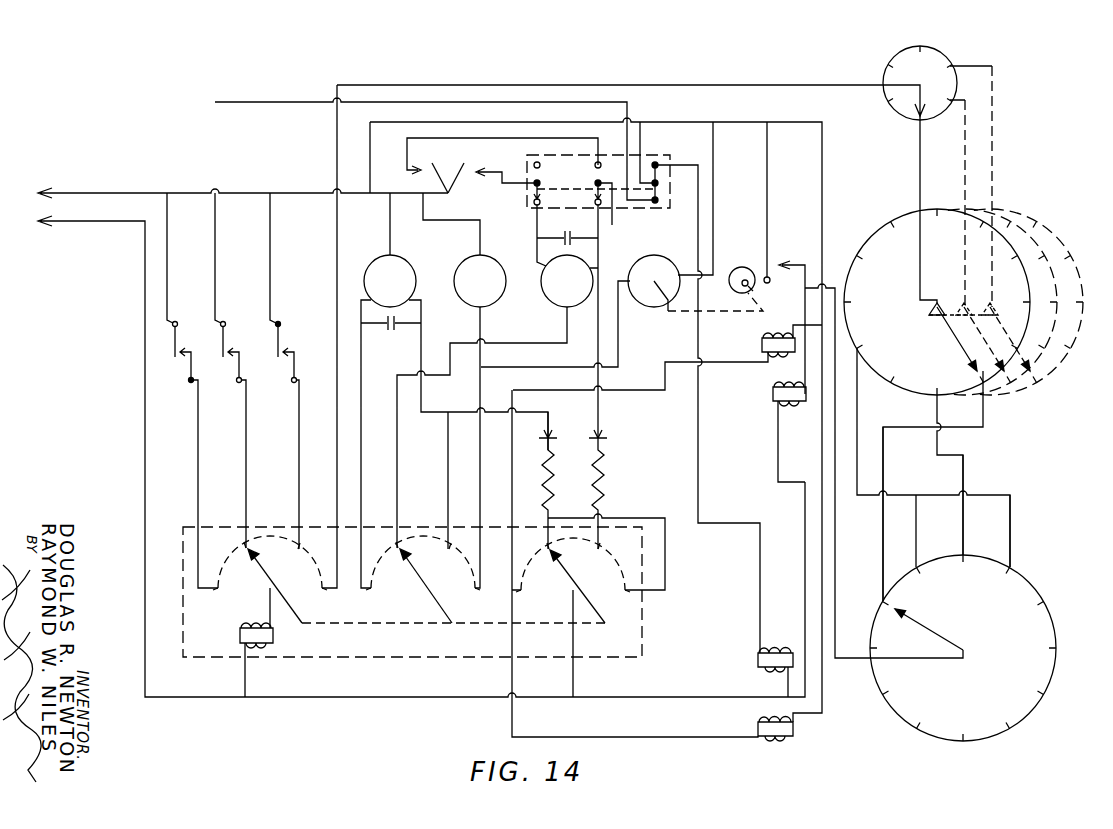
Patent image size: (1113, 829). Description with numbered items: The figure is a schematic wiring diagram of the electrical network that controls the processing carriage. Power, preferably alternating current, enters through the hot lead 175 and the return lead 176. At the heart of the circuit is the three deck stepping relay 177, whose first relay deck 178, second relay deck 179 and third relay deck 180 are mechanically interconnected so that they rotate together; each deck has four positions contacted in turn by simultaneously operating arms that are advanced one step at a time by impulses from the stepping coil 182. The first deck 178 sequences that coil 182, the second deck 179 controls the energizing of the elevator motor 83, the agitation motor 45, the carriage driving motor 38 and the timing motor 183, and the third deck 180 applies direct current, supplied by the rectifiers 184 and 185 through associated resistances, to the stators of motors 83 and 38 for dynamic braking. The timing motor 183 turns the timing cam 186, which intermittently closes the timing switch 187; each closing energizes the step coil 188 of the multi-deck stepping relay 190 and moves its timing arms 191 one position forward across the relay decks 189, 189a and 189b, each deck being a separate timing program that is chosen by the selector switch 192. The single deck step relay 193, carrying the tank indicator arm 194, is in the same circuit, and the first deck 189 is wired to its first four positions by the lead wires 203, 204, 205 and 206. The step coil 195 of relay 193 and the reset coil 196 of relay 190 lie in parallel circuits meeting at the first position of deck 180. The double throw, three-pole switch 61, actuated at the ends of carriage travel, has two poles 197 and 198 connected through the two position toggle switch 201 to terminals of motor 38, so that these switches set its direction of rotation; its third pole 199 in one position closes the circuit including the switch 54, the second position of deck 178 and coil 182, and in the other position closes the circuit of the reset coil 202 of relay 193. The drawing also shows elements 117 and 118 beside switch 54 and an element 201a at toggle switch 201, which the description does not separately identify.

The return lead 176 is at (63, 192).
The hot lead 175 is at (62, 223).
The switch 117 is at (187, 367).
The switch 54 is at (235, 367).
The switch 118 is at (290, 367).
The elevator motor 83 is at (378, 258).
The agitation motor 45 is at (459, 262).
The carriage driving motor 38 is at (545, 267).
The timing motor 183 is at (648, 258).
The switch blade 201a is at (440, 167).
The two position toggle switch 201 is at (457, 181).
The double throw, three-pole switch 61 is at (572, 155).
The pole of switch 61 197 is at (534, 180).
The pole of switch 61 198 is at (596, 181).
The third pole of switch 61 199 is at (660, 180).
The timing cam 186 is at (742, 267).
The timing switch 187 is at (793, 264).
The reset coil 196 is at (763, 339).
The step coil 188 is at (775, 389).
The rectifier 184 is at (552, 437).
The rectifier 185 is at (604, 437).
The first relay deck 178 is at (262, 584).
The second relay deck 179 is at (412, 579).
The third relay deck 180 is at (574, 572).
The stepping coil 182 is at (264, 645).
The three deck stepping relay 177 is at (355, 660).
The reset coil 202 is at (758, 653).
The step coil 195 is at (771, 737).
The selector switch 192 is at (893, 70).
The multi-deck stepping relay 190 is at (974, 281).
The relay deck 189 is at (922, 369).
The relay deck 189a is at (1037, 258).
The relay deck 189b is at (1048, 362).
The timing arm 191 is at (957, 337).
The single deck step relay 193 is at (1027, 715).
The tank indicator arm 194 is at (922, 622).
The lead wire 203 is at (882, 527).
The lead wire 204 is at (938, 523).
The lead wire 205 is at (964, 538).
The lead wire 206 is at (1011, 536).